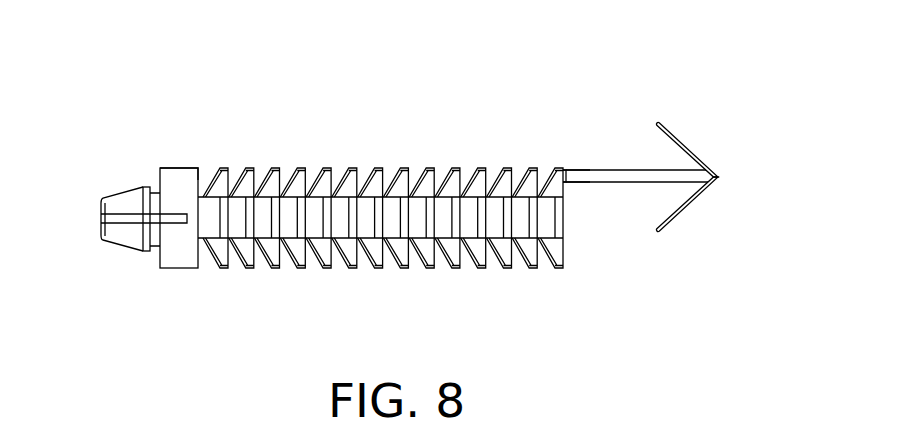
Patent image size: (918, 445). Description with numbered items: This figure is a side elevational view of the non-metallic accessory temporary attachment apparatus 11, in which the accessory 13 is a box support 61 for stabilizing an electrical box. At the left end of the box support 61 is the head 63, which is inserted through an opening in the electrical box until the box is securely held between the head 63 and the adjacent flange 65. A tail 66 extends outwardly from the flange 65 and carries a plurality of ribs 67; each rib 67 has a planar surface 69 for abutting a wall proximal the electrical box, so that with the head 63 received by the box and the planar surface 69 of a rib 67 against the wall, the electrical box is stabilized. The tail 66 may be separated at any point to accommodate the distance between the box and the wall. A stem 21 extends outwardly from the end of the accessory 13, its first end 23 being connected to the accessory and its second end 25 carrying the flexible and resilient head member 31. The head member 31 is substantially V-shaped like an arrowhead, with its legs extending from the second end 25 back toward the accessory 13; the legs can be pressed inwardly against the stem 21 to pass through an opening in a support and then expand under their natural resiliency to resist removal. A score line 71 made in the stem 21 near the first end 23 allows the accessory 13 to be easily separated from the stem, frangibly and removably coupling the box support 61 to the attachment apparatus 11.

The accessory temporary attachment apparatus 11 is at (144, 331).
The accessory 13 is at (417, 143).
The stem 21 is at (614, 140).
The first end of the stem 23 is at (563, 168).
The second end of the stem 25 is at (697, 183).
The flexible and resilient head member 31 is at (716, 143).
The box support 61 is at (172, 144).
The head of the box support 63 is at (127, 193).
The flange 65 is at (193, 168).
The tail 66 is at (445, 295).
The ribs 67 is at (333, 168).
The planar surface 69 is at (564, 257).
The score line 71 is at (572, 180).